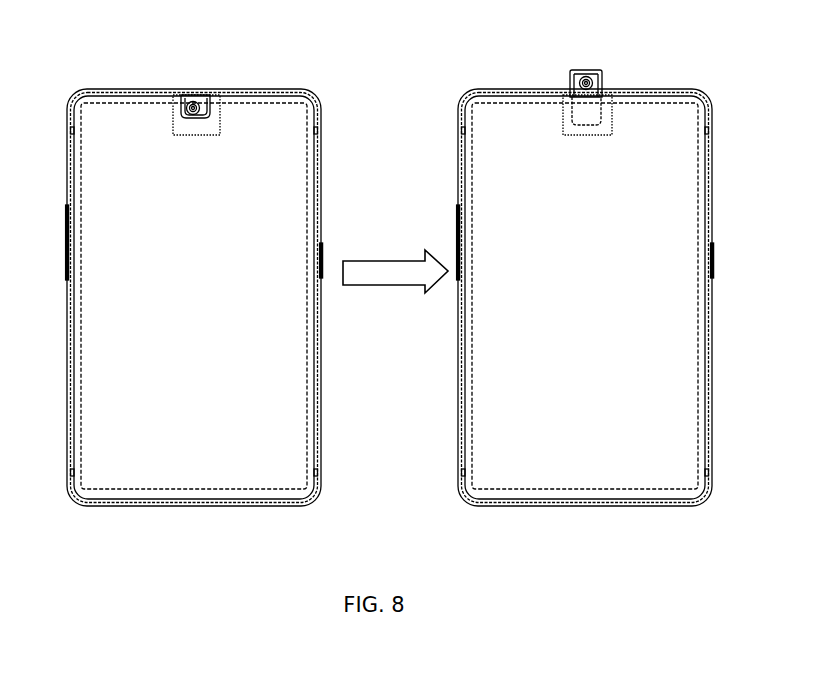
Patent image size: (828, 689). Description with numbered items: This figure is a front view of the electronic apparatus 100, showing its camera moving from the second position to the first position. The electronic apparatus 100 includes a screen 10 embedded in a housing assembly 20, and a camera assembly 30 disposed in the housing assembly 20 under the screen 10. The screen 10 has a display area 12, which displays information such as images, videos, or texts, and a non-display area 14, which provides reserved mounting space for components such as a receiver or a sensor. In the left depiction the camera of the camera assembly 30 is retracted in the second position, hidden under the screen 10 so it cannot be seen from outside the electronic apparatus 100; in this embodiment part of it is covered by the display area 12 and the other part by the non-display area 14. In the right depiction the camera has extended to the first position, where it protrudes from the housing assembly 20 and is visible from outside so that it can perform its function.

The screen 10 is at (275, 35).
The display area 12 is at (299, 110).
The non-display area 14 is at (268, 100).
The housing assembly 20 is at (108, 90).
The camera assembly 30 is at (200, 99).
The electronic apparatus 100 is at (195, 559).